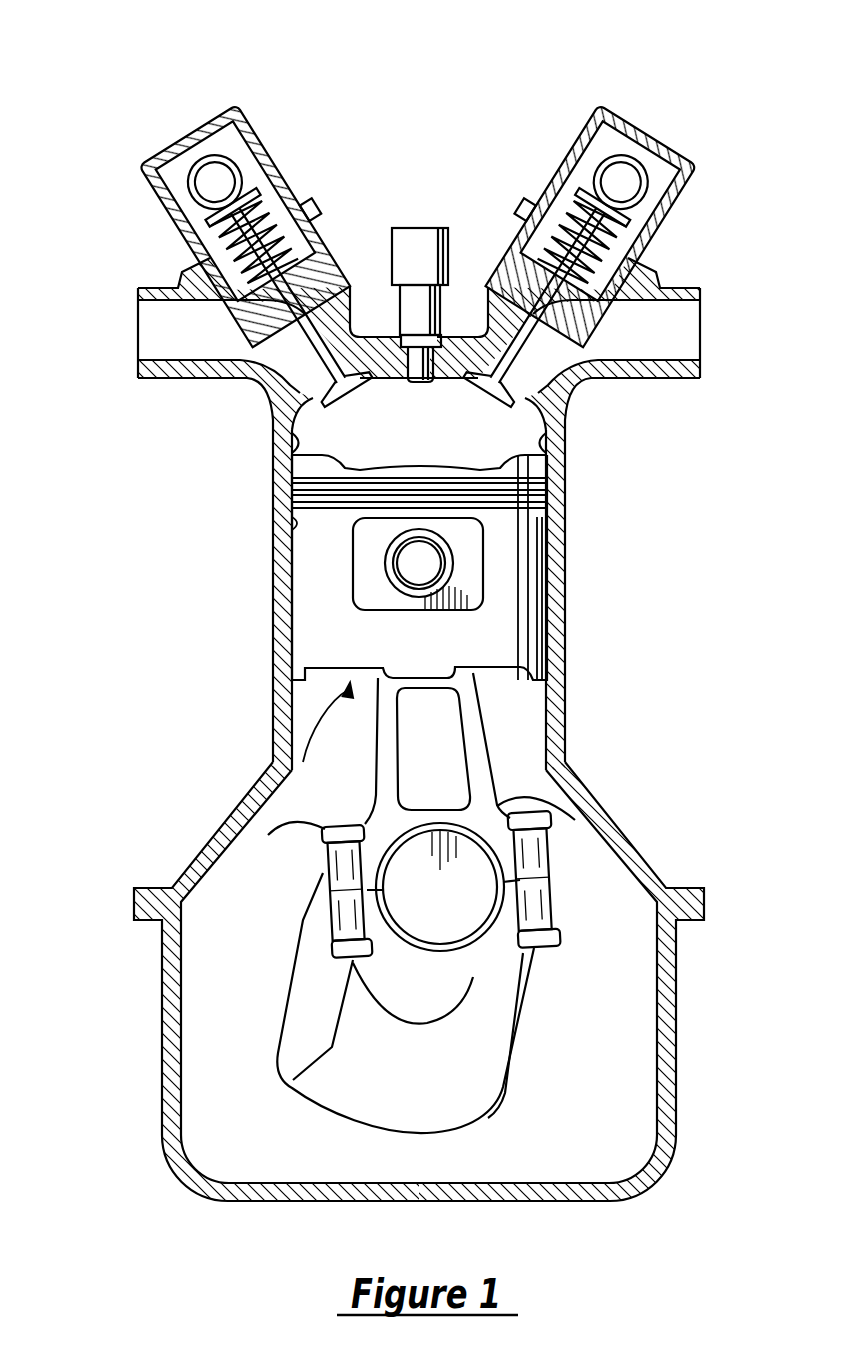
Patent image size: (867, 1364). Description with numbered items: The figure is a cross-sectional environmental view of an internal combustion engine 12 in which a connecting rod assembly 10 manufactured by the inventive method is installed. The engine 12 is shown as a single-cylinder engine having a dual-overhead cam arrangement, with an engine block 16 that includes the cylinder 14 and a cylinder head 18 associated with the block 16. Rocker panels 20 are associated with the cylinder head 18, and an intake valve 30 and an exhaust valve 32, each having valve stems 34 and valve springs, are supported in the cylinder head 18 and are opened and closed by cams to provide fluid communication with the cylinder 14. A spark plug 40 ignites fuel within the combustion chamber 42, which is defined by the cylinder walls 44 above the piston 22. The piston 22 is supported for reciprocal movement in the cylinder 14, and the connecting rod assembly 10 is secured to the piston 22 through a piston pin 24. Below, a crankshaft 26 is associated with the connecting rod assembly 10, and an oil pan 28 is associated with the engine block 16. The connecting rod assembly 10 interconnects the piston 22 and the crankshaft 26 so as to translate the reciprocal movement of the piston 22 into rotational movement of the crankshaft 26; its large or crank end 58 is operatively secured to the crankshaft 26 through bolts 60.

The connecting rod assembly 10 is at (508, 716).
The internal combustion engine 12 is at (391, 807).
The cylinder 14 is at (312, 693).
The engine block 16 is at (273, 605).
The cylinder head 18 is at (447, 321).
The rocker panels 20 is at (434, 218).
The piston 22 is at (275, 759).
The piston pin 24 is at (425, 567).
The crankshaft 26 is at (520, 1017).
The oil pan 28 is at (677, 1089).
The intake valve 30 is at (291, 301).
The exhaust valve 32 is at (543, 301).
The valve stems 34 is at (300, 322).
The spark plug 40 is at (420, 228).
The combustion chamber 42 is at (423, 561).
The cylinder walls 44 is at (297, 454).
The crank end 58 is at (433, 815).
The bolts 60 is at (268, 835).